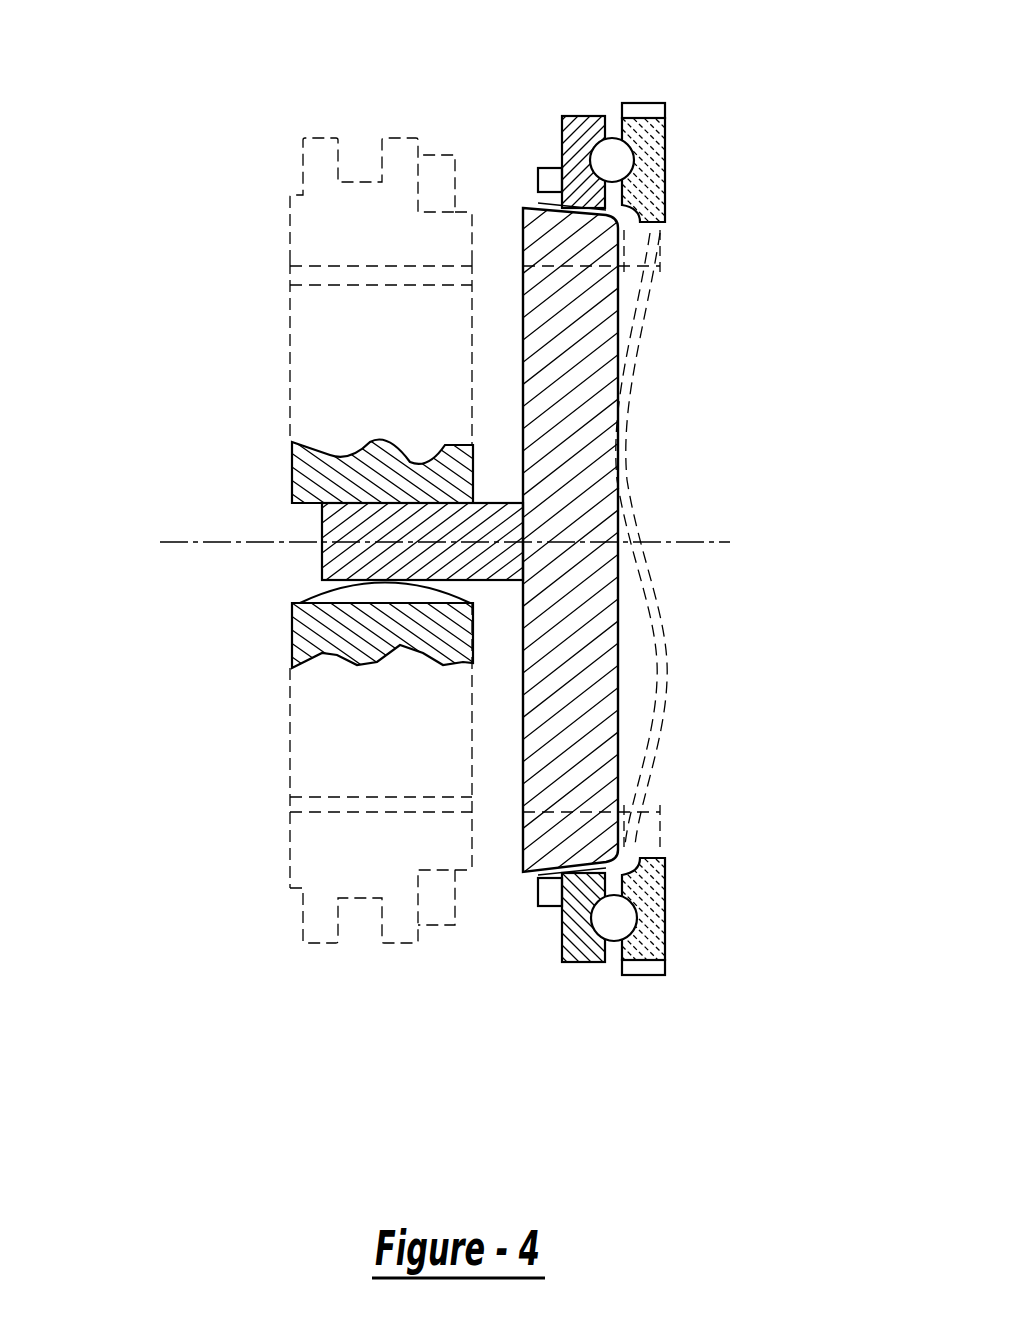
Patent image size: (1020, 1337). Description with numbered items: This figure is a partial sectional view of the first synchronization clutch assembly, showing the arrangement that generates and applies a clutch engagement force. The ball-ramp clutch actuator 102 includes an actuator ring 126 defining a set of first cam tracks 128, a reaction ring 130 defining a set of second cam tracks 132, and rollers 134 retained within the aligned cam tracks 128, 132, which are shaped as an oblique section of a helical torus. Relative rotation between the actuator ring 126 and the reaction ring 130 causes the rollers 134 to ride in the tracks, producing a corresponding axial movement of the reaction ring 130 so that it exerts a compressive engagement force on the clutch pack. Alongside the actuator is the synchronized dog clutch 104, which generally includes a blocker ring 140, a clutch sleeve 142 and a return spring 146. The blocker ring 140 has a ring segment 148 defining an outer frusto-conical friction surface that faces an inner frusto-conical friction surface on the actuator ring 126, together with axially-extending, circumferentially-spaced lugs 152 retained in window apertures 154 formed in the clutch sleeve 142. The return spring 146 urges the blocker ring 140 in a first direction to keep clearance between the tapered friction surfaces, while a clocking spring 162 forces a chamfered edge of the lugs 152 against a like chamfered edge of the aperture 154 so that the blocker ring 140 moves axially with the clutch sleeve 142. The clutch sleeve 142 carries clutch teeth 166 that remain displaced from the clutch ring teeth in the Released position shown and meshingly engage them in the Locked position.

The ball-ramp clutch actuator 102 is at (655, 131).
The synchronized dog clutch 104 is at (288, 488).
The actuator ring 126 is at (582, 955).
The first cam tracks 128 is at (596, 152).
The reaction ring 130 is at (650, 930).
The second cam tracks 132 is at (650, 158).
The rollers 134 is at (617, 918).
The blocker ring 140 is at (518, 238).
The clutch sleeve 142 is at (288, 842).
The return spring 146 is at (658, 293).
The ring segment 148 is at (623, 410).
The lugs 152 is at (508, 500).
The window apertures 154 is at (308, 503).
The clocking spring 162 is at (298, 588).
The clutch teeth 166 is at (447, 172).